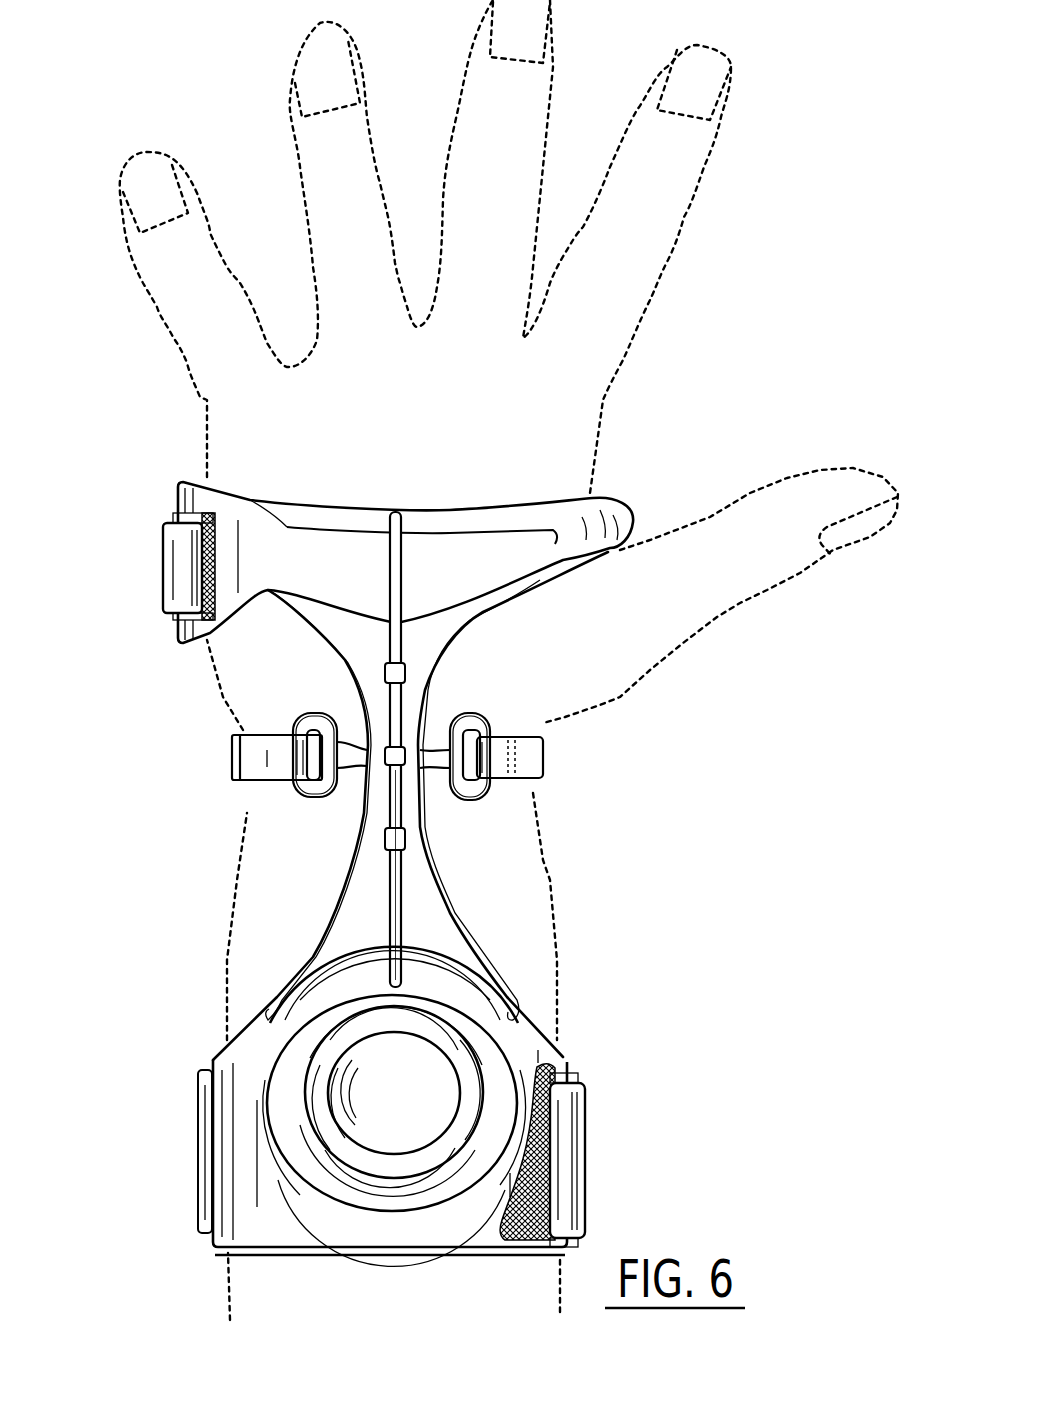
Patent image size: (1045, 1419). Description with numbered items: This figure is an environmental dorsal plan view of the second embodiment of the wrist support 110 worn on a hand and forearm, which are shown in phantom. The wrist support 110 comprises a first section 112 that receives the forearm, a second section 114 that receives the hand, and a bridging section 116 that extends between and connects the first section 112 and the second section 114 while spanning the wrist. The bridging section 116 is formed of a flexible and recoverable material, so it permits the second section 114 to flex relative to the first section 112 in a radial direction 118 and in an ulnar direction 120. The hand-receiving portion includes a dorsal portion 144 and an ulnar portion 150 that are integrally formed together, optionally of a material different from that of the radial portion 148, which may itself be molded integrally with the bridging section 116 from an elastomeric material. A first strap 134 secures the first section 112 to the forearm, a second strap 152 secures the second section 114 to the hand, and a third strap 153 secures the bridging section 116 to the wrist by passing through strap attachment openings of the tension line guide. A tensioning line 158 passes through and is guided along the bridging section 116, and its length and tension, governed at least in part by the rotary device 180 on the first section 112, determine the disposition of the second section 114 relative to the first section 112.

The wrist support 110 is at (460, 455).
The first section 112 is at (413, 1227).
The second section 114 is at (303, 527).
The bridging section 116 is at (407, 873).
The radial direction 118 is at (757, 668).
The ulnar direction 120 is at (150, 557).
The first strap 134 is at (568, 1153).
The dorsal portion 144 is at (487, 563).
The radial portion 148 is at (630, 515).
The ulnar portion 150 is at (183, 500).
The second strap 152 is at (175, 592).
The third strap 153 is at (253, 752).
The tensioning line 158 is at (390, 913).
The rotary device 180 is at (380, 1120).